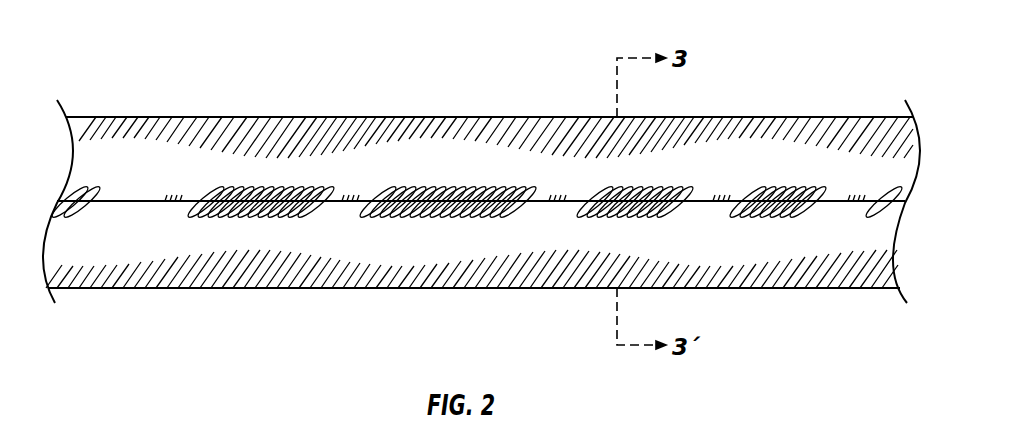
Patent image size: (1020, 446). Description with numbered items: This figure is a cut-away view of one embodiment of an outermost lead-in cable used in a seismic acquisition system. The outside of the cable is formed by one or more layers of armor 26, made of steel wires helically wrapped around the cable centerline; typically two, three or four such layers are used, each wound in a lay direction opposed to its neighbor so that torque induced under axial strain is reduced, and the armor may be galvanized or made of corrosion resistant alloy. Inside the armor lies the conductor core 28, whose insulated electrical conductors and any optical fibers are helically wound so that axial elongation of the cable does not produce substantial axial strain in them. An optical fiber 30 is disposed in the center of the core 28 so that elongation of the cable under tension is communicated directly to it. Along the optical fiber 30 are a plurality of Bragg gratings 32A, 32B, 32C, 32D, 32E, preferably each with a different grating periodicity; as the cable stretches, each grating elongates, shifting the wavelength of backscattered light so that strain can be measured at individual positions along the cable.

The armor 26 is at (400, 117).
The conductor core 28 is at (237, 217).
The optical fiber 30 is at (877, 200).
The Bragg grating 32A is at (175, 205).
The Bragg grating 32B is at (352, 205).
The Bragg grating 32C is at (558, 205).
The Bragg grating 32D is at (722, 205).
The Bragg grating 32E is at (855, 205).